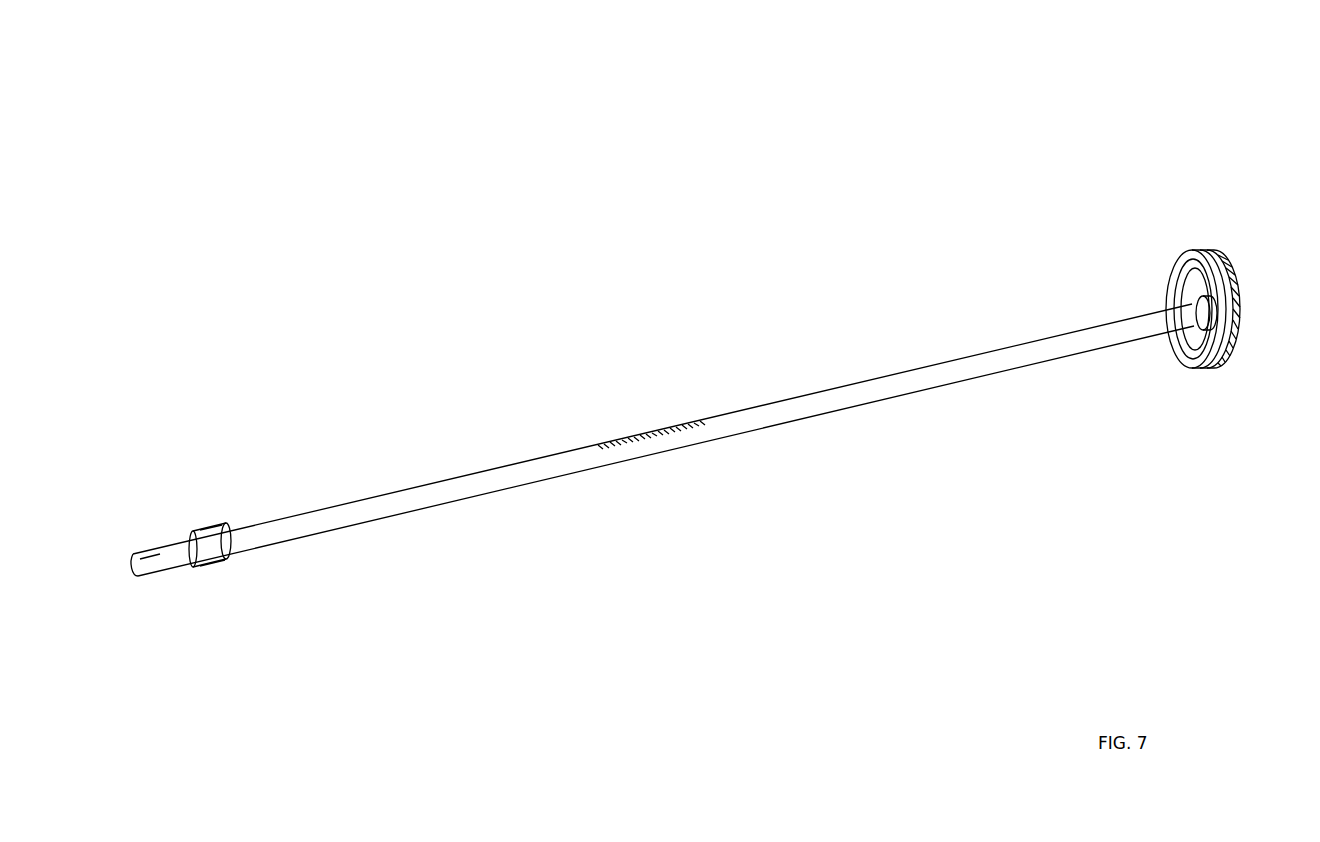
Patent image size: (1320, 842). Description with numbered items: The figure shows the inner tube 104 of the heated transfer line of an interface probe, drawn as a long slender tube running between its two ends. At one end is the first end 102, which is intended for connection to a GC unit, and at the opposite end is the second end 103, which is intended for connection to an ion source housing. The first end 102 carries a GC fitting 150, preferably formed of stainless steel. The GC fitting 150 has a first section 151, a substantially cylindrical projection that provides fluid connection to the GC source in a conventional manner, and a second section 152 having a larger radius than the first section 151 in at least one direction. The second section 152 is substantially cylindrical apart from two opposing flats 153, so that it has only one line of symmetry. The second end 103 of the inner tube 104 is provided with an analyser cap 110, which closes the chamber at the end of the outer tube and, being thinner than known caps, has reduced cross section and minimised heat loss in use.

The first end 102 is at (172, 448).
The second end 103 is at (1102, 123).
The inner tube 104 is at (783, 415).
The analyser cap 110 is at (1208, 250).
The GC fitting 150 is at (191, 543).
The first section 151 is at (168, 568).
The second section 152 is at (220, 562).
The flats 153 is at (215, 533).